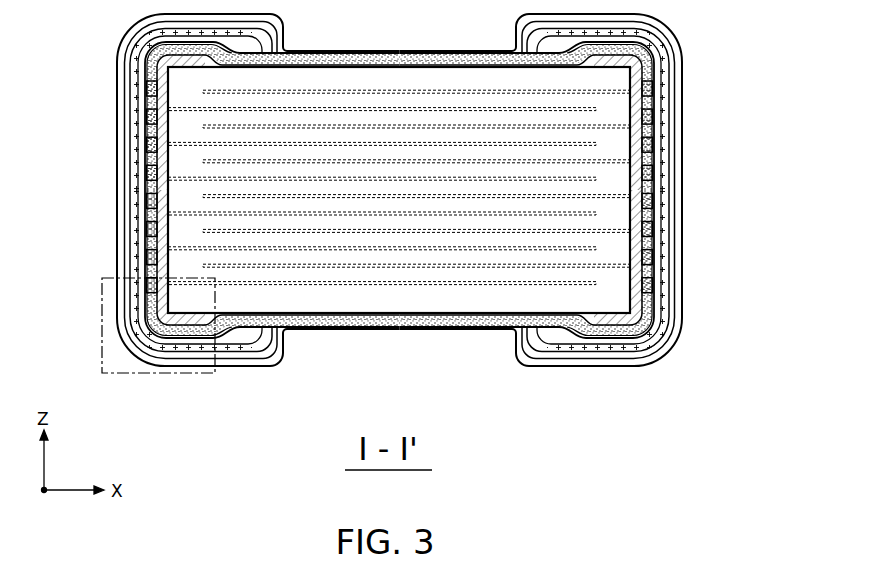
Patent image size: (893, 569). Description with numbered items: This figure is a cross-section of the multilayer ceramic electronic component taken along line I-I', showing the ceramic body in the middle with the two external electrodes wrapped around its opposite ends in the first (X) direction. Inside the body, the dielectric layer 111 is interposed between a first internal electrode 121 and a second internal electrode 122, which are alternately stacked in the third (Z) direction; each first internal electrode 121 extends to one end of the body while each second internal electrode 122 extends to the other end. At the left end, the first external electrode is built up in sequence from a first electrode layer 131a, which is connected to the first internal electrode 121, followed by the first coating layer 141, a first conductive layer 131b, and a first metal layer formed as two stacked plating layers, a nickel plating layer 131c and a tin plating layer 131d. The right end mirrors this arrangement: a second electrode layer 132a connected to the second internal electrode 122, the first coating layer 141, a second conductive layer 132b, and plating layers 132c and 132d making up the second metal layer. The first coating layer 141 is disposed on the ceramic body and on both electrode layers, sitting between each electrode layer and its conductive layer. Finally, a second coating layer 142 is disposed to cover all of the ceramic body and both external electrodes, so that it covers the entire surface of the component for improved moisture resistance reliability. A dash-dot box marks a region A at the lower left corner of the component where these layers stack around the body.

The dielectric layer 111 is at (397, 300).
The first internal electrode 121 is at (320, 284).
The second internal electrode 122 is at (462, 268).
The first electrode layer 131a is at (162, 77).
The first conductive layer 131b is at (145, 153).
The first metal layer plating layer (nickel plating layer) 131c is at (135, 180).
The tin plating layer 131d is at (128, 208).
The second electrode layer 132a is at (637, 78).
The second conductive layer 132b is at (657, 152).
The second metal layer plating layer (nickel plating layer) 132c is at (668, 180).
The tin plating layer 132d is at (677, 208).
The first coating layer 141 is at (137, 121).
The second coating layer 142 is at (119, 238).
The region A is at (98, 333).